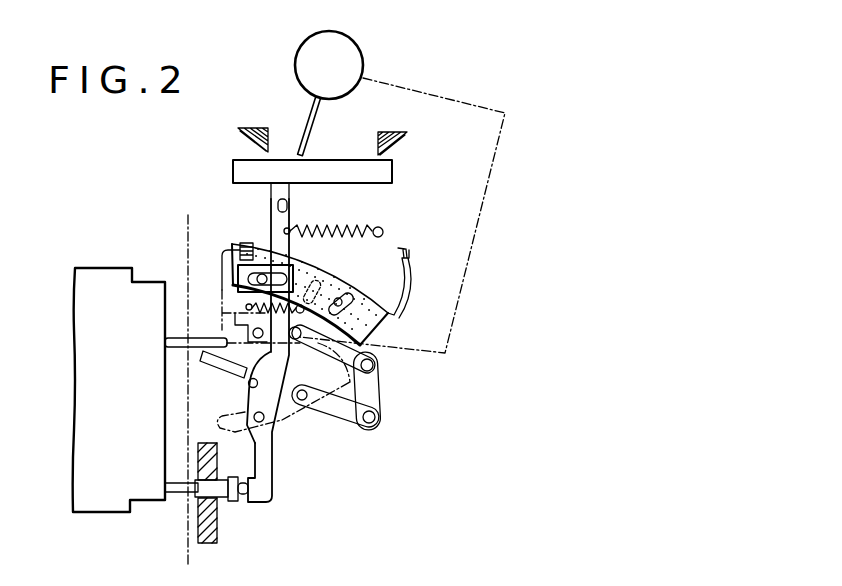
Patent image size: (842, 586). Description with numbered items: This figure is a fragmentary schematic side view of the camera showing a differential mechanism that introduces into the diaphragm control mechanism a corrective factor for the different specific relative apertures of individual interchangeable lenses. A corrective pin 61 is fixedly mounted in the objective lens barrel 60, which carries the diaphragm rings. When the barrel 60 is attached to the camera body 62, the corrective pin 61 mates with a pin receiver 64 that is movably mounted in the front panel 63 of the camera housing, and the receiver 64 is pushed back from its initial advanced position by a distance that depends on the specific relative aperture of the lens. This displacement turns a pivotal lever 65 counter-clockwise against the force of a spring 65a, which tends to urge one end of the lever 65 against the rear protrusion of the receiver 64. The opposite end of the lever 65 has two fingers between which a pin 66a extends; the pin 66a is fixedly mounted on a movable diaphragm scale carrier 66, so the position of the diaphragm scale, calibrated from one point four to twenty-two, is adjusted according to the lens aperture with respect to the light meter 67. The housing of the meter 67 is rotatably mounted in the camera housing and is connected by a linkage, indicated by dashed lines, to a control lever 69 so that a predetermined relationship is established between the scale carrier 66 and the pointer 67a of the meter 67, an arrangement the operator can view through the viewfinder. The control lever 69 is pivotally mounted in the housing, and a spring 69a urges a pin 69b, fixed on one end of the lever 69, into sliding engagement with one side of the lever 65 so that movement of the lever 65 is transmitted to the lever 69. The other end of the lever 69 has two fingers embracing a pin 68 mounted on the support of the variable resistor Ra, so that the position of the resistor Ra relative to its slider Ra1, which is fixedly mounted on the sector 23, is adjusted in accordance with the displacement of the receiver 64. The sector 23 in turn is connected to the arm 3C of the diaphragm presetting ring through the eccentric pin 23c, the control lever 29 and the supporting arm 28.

The light meter 67 is at (312, 52).
The pointer 67a is at (310, 110).
The diaphragm scale carrier 66 is at (394, 175).
The pin 66a is at (291, 206).
The spring 65a is at (346, 231).
The pin 68 is at (317, 290).
The variable resistor Ra is at (358, 281).
The slider Ra1 is at (228, 290).
The spring 69a is at (247, 306).
The arm 3C is at (181, 338).
The objective lens barrel 60 is at (135, 479).
The corrective pin 61 is at (178, 490).
The pin receiver 64 is at (218, 495).
The front panel 63 is at (215, 541).
The pivotal lever 65 is at (266, 468).
The sector 23 is at (281, 420).
The pin 69b is at (246, 386).
The control lever 69 is at (362, 348).
The supporting arm 28 is at (373, 384).
The control lever 29 is at (353, 426).
The eccentric pin 23c is at (305, 399).
The camera body 62 is at (361, 532).